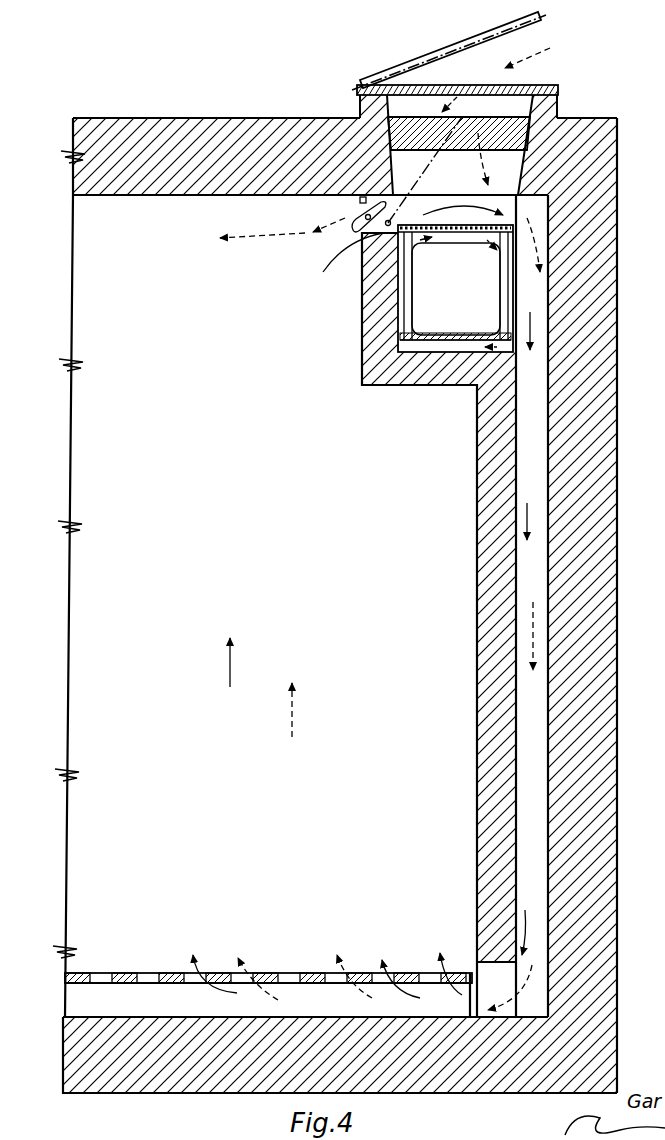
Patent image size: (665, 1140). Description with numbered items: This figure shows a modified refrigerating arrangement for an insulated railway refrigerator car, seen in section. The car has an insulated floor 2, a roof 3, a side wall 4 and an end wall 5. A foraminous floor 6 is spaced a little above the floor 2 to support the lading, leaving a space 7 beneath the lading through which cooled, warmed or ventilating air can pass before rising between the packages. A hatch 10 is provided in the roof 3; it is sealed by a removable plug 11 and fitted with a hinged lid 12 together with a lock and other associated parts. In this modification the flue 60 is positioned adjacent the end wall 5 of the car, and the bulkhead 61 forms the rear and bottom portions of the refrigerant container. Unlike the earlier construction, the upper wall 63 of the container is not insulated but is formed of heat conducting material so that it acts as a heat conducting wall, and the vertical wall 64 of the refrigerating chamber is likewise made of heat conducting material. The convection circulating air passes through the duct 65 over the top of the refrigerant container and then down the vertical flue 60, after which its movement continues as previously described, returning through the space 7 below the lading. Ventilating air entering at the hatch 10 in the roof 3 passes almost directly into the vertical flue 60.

The insulated floor 2 is at (340, 1055).
The roof 3 is at (345, 145).
The side wall 4 is at (73, 262).
The end wall 5 is at (582, 605).
The foraminous floor 6 is at (186, 970).
The space 7 is at (222, 983).
The hatch 10 is at (457, 140).
The removable plug 11 is at (459, 151).
The hinged lid 12 is at (470, 43).
The flue 60 is at (516, 606).
The bulkhead 61 is at (439, 621).
The upper wall 63 is at (466, 213).
The vertical wall 64 is at (516, 296).
The duct 65 is at (356, 219).